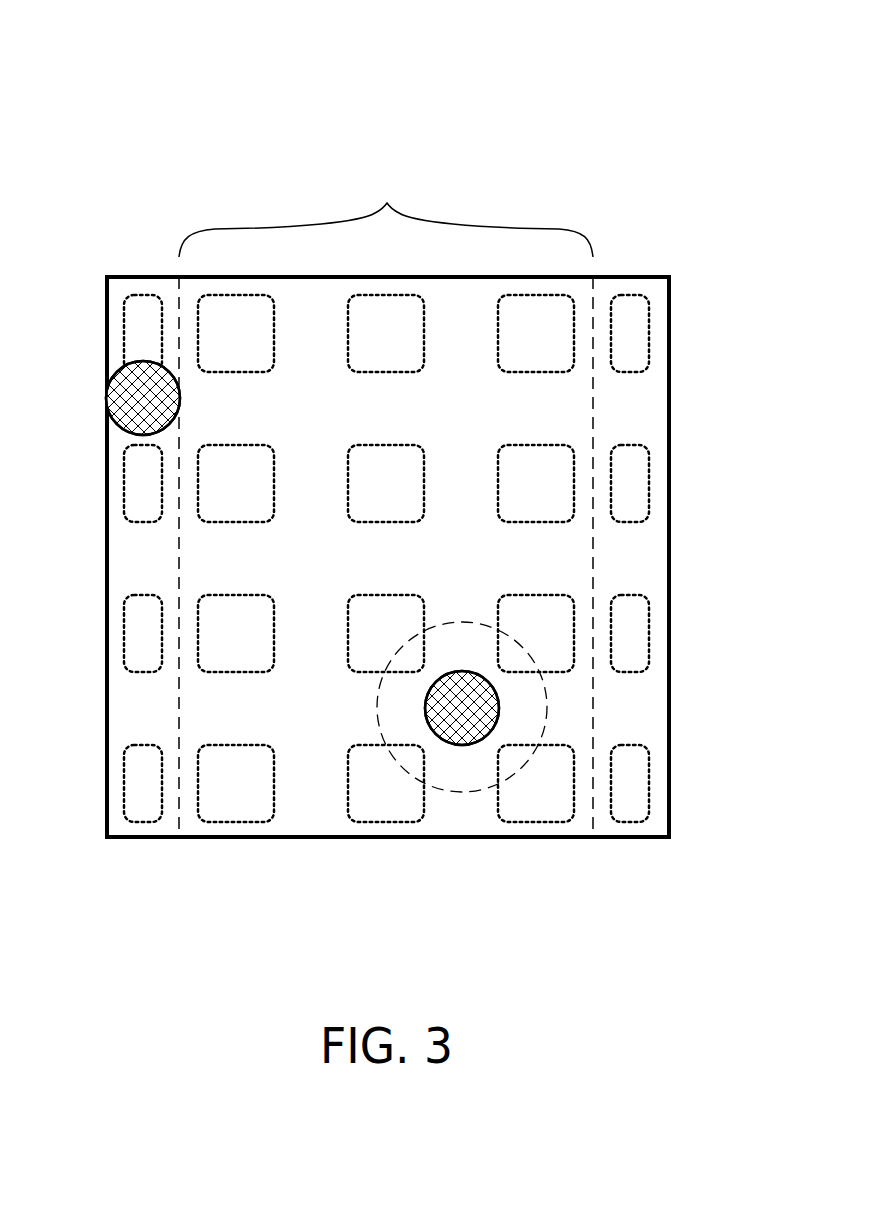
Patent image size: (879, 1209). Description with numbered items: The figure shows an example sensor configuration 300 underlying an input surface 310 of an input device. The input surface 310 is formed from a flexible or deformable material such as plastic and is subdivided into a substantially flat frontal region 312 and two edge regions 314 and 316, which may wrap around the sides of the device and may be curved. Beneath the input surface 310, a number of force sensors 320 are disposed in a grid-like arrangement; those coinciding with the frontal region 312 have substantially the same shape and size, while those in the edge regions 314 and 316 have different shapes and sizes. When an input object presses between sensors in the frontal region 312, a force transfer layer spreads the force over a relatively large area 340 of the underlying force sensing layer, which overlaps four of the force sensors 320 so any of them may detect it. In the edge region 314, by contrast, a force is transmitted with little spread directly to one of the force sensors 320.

The sensor configuration 300 is at (194, 64).
The input surface 310 is at (125, 840).
The frontal region 312 is at (386, 214).
The edge region 314 is at (143, 254).
The edge region 316 is at (630, 254).
The force sensor 320 is at (219, 347).
The area 340 is at (462, 793).